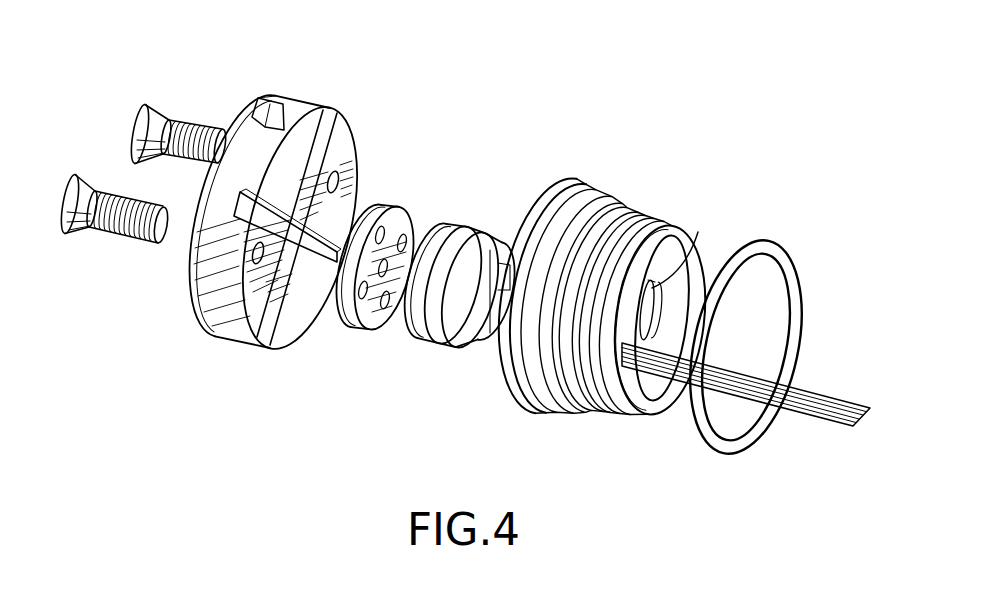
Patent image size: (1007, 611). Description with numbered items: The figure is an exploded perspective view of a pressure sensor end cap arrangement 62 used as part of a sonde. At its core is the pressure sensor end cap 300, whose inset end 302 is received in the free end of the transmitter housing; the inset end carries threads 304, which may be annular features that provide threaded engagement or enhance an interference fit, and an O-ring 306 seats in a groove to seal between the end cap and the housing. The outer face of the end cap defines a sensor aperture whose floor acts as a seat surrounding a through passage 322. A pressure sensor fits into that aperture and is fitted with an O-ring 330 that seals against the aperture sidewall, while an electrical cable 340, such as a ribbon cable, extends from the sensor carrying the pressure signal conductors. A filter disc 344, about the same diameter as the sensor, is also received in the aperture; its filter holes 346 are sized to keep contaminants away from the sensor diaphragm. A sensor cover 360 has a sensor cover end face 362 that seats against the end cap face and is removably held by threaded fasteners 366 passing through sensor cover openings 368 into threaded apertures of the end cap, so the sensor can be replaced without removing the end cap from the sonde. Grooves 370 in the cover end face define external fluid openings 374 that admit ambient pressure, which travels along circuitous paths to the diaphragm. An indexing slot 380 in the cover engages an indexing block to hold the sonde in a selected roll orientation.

The pressure sensor end cap arrangement 62 is at (531, 99).
The pressure sensor end cap 300 is at (580, 178).
The inset end 302 is at (649, 416).
The threads 304 is at (597, 411).
The O-ring 306 is at (798, 255).
The through passage 322 is at (699, 233).
The O-ring 330 is at (440, 353).
The electrical cable 340 is at (803, 421).
The filter disc 344 is at (393, 207).
The filter holes 346 is at (393, 321).
The sensor cover 360 is at (293, 93).
The sensor cover end face 362 is at (306, 149).
The threaded fasteners 366 is at (137, 113).
The sensor cover openings 368 is at (257, 287).
The grooves 370 is at (352, 181).
The external fluid openings 374 is at (341, 122).
The indexing slot 380 is at (250, 118).